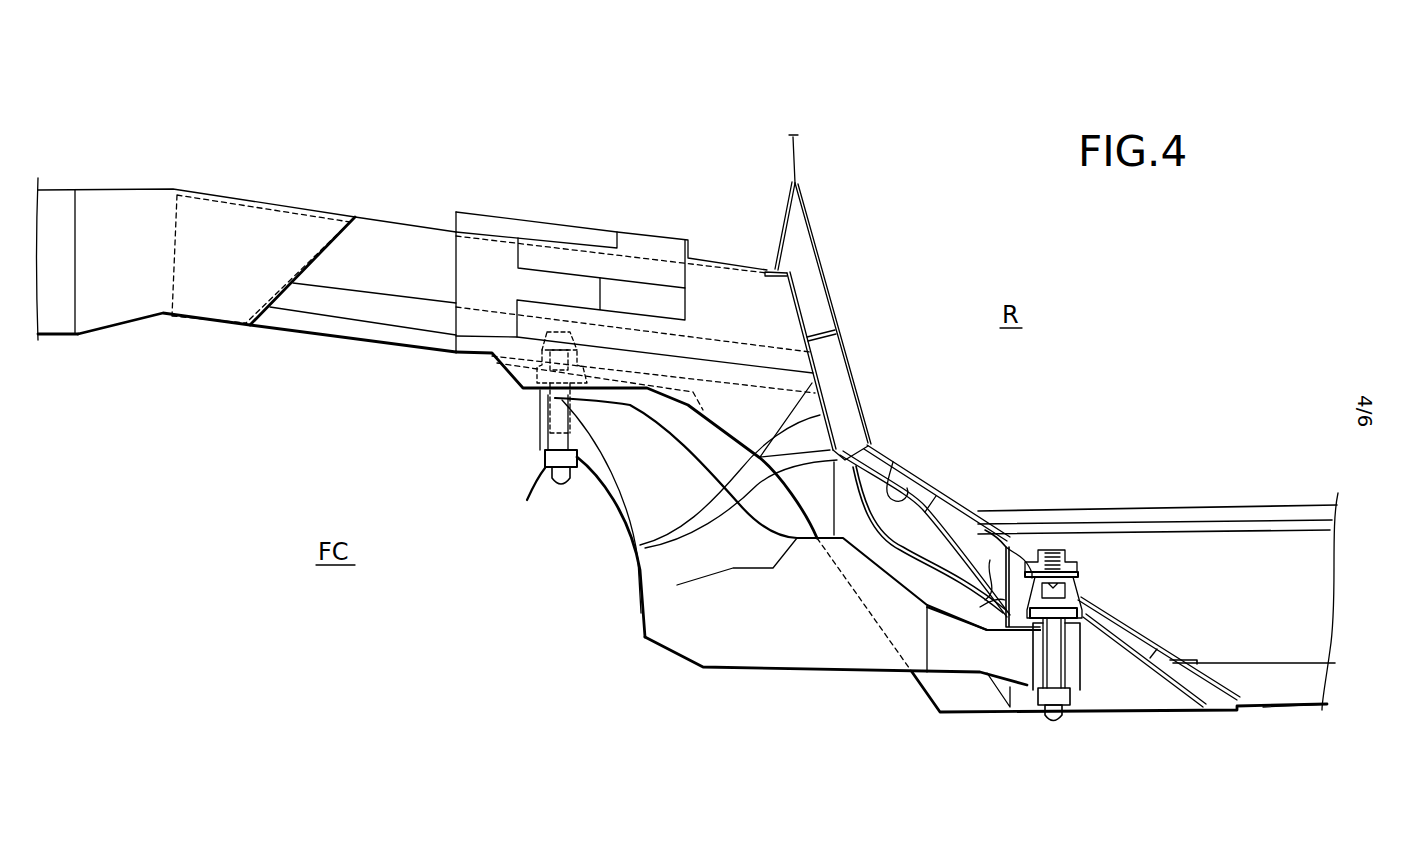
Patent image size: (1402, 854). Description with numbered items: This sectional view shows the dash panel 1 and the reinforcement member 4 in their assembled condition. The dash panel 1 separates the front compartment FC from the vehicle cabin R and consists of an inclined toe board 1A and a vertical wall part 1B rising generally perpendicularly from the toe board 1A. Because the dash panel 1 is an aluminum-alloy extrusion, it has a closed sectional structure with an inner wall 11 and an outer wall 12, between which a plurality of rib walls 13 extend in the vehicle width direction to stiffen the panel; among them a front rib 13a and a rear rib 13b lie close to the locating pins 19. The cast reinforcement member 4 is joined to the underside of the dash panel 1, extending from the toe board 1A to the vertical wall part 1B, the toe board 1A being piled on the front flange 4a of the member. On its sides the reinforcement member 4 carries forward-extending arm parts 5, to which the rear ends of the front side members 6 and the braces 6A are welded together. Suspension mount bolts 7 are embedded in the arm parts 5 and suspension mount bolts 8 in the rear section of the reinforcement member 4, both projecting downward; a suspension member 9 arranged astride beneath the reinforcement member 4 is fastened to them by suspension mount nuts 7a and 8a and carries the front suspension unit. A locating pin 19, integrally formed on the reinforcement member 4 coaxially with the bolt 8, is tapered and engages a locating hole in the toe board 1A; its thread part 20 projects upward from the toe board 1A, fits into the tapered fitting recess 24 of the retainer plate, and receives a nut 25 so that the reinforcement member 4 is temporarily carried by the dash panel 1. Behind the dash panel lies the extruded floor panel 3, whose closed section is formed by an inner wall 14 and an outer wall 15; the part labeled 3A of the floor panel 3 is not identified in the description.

The dash panel 1 is at (807, 209).
The toe board 1A is at (940, 484).
The vertical wall part 1B is at (823, 272).
The floor panel 3 is at (1277, 506).
The side sill upper wall 3A is at (1208, 506).
The reinforcement member 4 is at (963, 720).
The front flange 4a is at (643, 548).
The arm parts 5 is at (473, 353).
The front side members 6 is at (395, 222).
The braces 6A is at (481, 252).
The suspension mount bolts 7 is at (540, 420).
The suspension mount nuts 7a is at (551, 478).
The suspension mount bolts 8 is at (1058, 648).
The suspension mount nuts 8a is at (1040, 693).
The suspension members 9 is at (725, 672).
The inner wall 11 is at (893, 460).
The outer wall 12 is at (908, 496).
The rib walls 13 is at (823, 331).
The front rib 13a is at (1022, 558).
The rear rib 13b is at (1125, 628).
The inner wall 14 is at (1312, 662).
The outer wall 15 is at (1306, 706).
The locating pins 19 is at (1005, 615).
The thread part 20 is at (1051, 548).
The tapered fitting recess 24 is at (1068, 590).
The nut 25 is at (1073, 568).